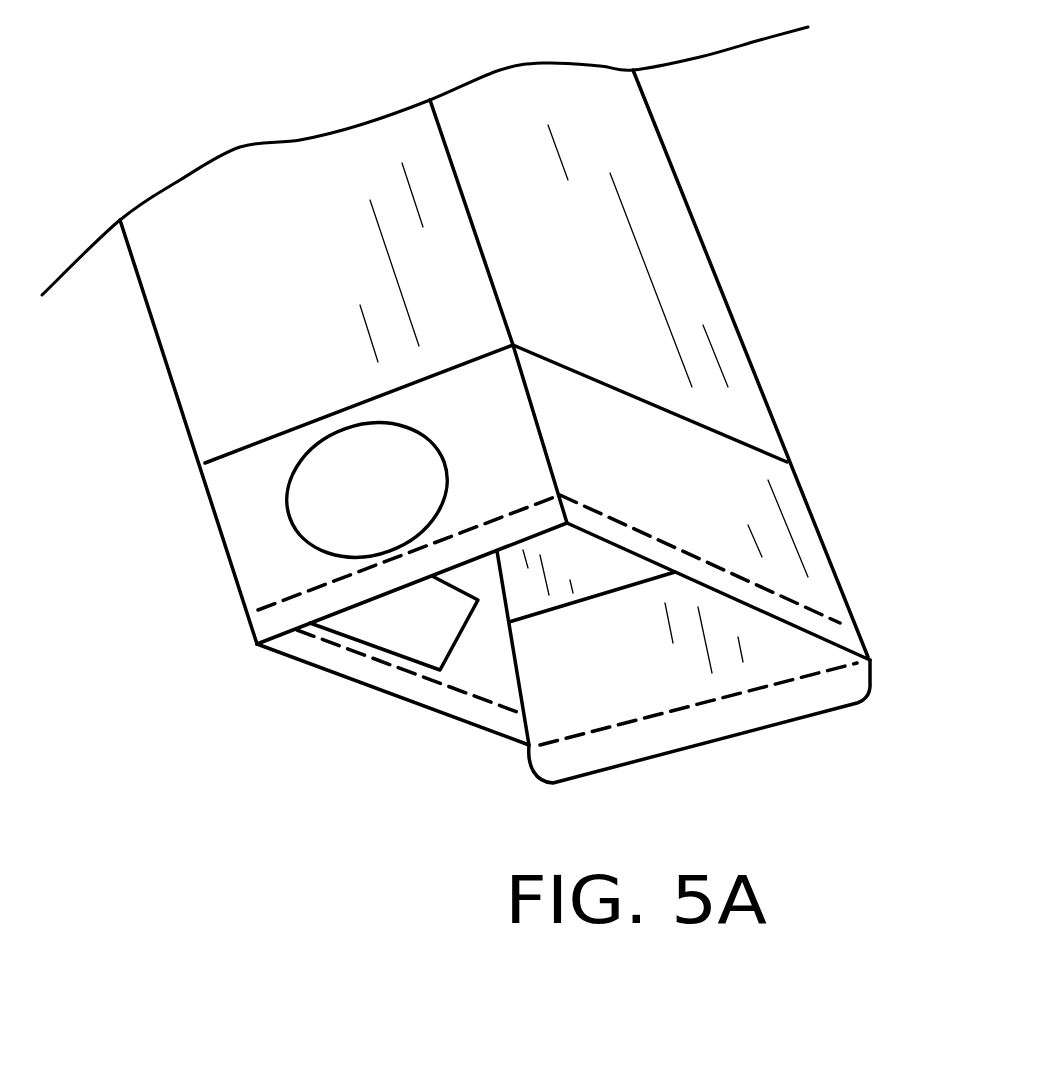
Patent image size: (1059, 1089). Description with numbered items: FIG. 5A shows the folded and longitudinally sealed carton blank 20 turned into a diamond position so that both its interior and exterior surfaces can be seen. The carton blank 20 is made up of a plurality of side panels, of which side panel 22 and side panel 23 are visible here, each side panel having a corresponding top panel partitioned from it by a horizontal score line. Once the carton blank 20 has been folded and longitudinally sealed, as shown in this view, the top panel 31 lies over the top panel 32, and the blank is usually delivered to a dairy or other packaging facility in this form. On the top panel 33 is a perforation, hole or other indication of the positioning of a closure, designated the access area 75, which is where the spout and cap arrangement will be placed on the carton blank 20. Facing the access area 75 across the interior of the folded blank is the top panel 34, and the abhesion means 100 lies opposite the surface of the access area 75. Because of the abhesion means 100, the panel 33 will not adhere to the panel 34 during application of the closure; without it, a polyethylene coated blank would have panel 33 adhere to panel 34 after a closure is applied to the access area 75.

The carton blank 20 is at (736, 216).
The side panel 22 is at (708, 363).
The side panel 23 is at (316, 372).
The top panel 31 is at (683, 666).
The top panel 32 is at (691, 502).
The top panel 33 is at (386, 494).
The top panel 34 is at (407, 625).
The access area 75 is at (303, 520).
The abhesion means 100 is at (383, 653).